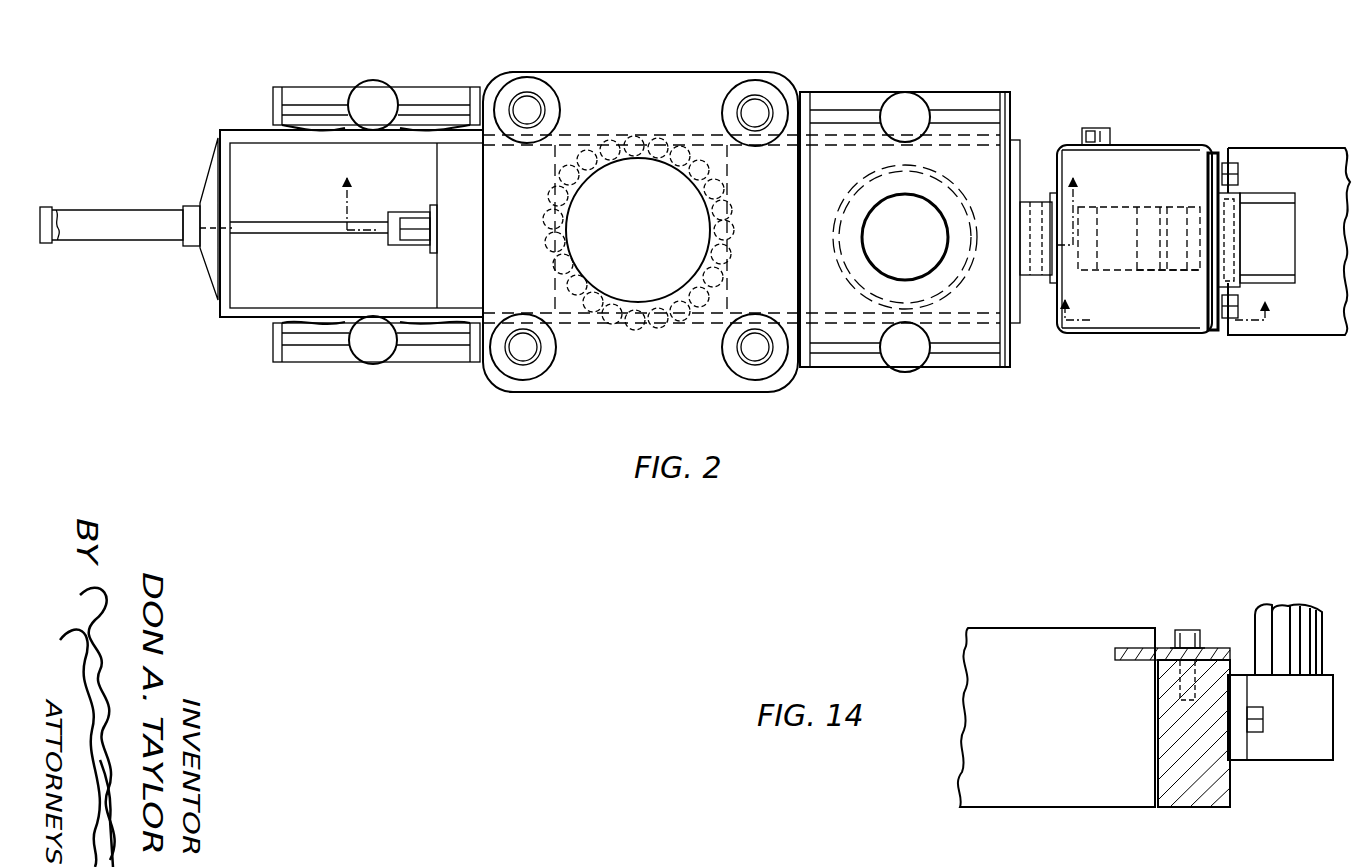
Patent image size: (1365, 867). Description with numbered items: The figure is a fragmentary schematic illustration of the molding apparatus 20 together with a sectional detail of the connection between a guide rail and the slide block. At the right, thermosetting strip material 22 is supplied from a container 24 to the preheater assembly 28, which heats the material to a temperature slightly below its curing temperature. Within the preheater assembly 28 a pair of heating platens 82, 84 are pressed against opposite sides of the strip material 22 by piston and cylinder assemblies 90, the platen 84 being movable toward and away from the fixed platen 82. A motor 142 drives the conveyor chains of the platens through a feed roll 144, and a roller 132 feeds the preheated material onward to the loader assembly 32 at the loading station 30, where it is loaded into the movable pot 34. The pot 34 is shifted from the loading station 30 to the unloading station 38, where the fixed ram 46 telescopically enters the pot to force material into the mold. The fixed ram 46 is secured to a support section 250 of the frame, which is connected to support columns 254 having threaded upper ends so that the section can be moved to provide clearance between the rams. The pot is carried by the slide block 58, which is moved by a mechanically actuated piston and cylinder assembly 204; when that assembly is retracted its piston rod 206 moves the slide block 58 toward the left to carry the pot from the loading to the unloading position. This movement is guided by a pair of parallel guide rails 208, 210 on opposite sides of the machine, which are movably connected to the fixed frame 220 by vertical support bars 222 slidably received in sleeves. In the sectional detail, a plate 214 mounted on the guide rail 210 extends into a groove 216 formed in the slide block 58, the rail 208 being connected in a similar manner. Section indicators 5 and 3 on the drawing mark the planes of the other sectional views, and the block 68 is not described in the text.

In FIG. 2, the molding apparatus 20 is at (138, 112).
In FIG. 2, the thermosetting strip material 22 is at (1024, 206).
In FIG. 2, the container 24 is at (1316, 150).
In FIG. 2, the preheater assembly 28 is at (1137, 202).
In FIG. 2, the loading station 30 is at (925, 193).
In FIG. 2, the loader assembly 32 is at (1016, 95).
In FIG. 2, the movable pot 34 is at (848, 202).
In FIG. 2, the unloading station 38 is at (741, 202).
In FIG. 2, the fixed ram 46 is at (596, 294).
In FIG. 2, the slide block 58 is at (432, 276).
In FIG. 14, the slide block 58 is at (1096, 606).
In FIG. 2, the actuator block 68 is at (452, 206).
In FIG. 2, the heating platen 82 is at (1147, 217).
In FIG. 2, the heating platen 84 is at (1190, 268).
In FIG. 2, the piston and cylinder assemblies 90 is at (1232, 164).
In FIG. 2, the roller 132 is at (1018, 283).
In FIG. 2, the motor 142 is at (1122, 122).
In FIG. 2, the feed roll 144 is at (1088, 206).
In FIG. 2, the piston and cylinder assembly 204 is at (78, 214).
In FIG. 2, the piston rod 206 is at (312, 200).
In FIG. 2, the guide rail 208 is at (240, 136).
In FIG. 2, the guide rail 210 is at (258, 315).
In FIG. 14, the guide rail 210 is at (1218, 788).
In FIG. 14, the plate 214 is at (1214, 648).
In FIG. 14, the groove 216 is at (1115, 660).
In FIG. 2, the fixed frame 220 is at (338, 92).
In FIG. 2, the vertical support bars 222 is at (392, 98).
In FIG. 14, the vertical support bars 222 is at (1316, 584).
In FIG. 2, the support section 250 is at (672, 74).
In FIG. 2, the support columns 254 is at (527, 94).
In FIG. 2, the section line 5 is at (706, 195).
In FIG. 2, the section line 3 is at (1167, 296).